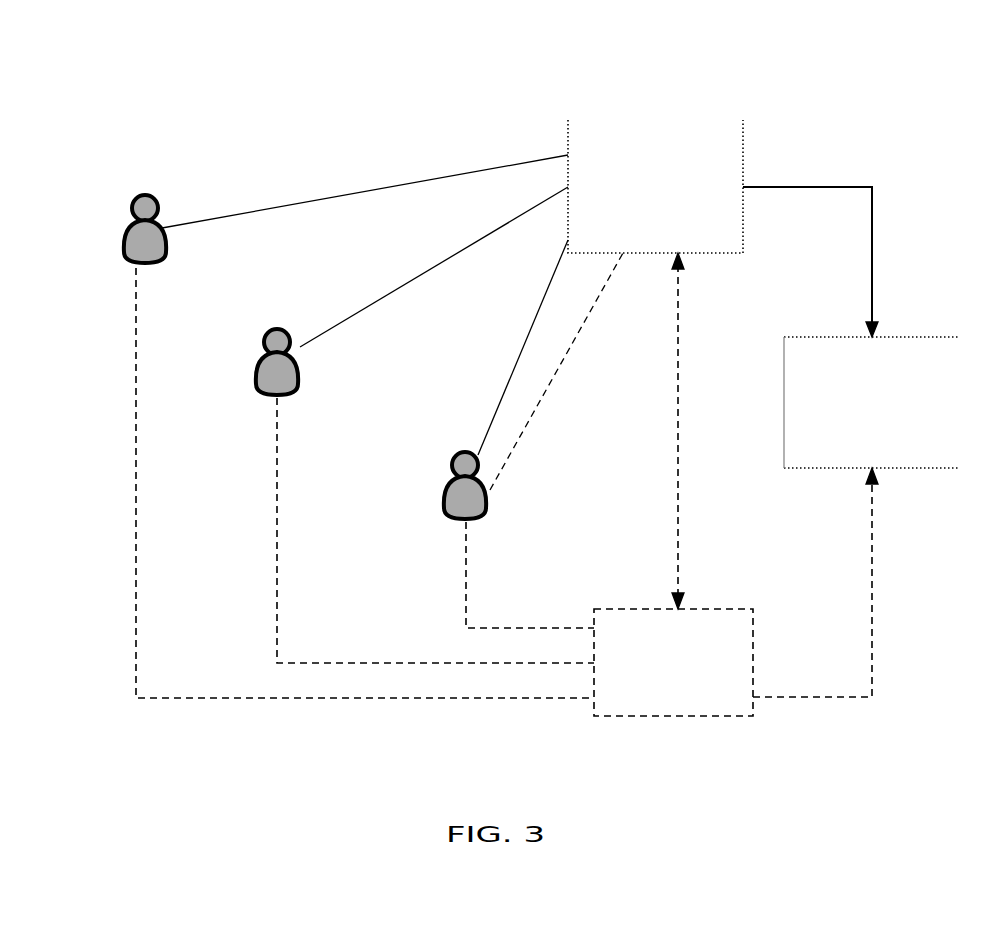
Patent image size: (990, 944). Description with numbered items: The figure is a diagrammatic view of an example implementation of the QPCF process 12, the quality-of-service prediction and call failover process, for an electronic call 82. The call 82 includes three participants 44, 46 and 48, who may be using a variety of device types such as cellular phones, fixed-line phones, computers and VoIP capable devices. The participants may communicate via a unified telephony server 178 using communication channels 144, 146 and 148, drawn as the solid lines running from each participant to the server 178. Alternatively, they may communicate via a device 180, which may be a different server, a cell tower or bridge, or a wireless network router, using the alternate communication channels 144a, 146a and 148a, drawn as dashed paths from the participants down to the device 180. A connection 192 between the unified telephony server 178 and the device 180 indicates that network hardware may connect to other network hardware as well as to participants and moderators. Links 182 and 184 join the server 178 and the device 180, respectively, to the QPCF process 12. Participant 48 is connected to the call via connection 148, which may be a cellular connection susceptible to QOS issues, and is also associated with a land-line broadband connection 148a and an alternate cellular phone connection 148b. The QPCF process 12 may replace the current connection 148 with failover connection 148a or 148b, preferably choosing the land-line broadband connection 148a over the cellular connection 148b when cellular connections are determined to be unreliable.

The QPCF process 12 is at (940, 337).
The participant 44 is at (112, 232).
The participant 46 is at (252, 367).
The participant 48 is at (432, 497).
The electronic call 82 is at (97, 762).
The communication channel 144 is at (298, 202).
The alternate communication channel 144a is at (135, 548).
The communication channel 146 is at (432, 265).
The alternate communication channel 146a is at (277, 605).
The connection 148 is at (497, 403).
The failover connection 148a is at (466, 600).
The failover connection 148b is at (520, 445).
The unified telephony server 178 is at (708, 120).
The device 180 is at (703, 609).
The connection to QPCF process 182 is at (850, 187).
The connection from back-end module to QPCF process 184 is at (872, 653).
The connection 192 is at (678, 373).